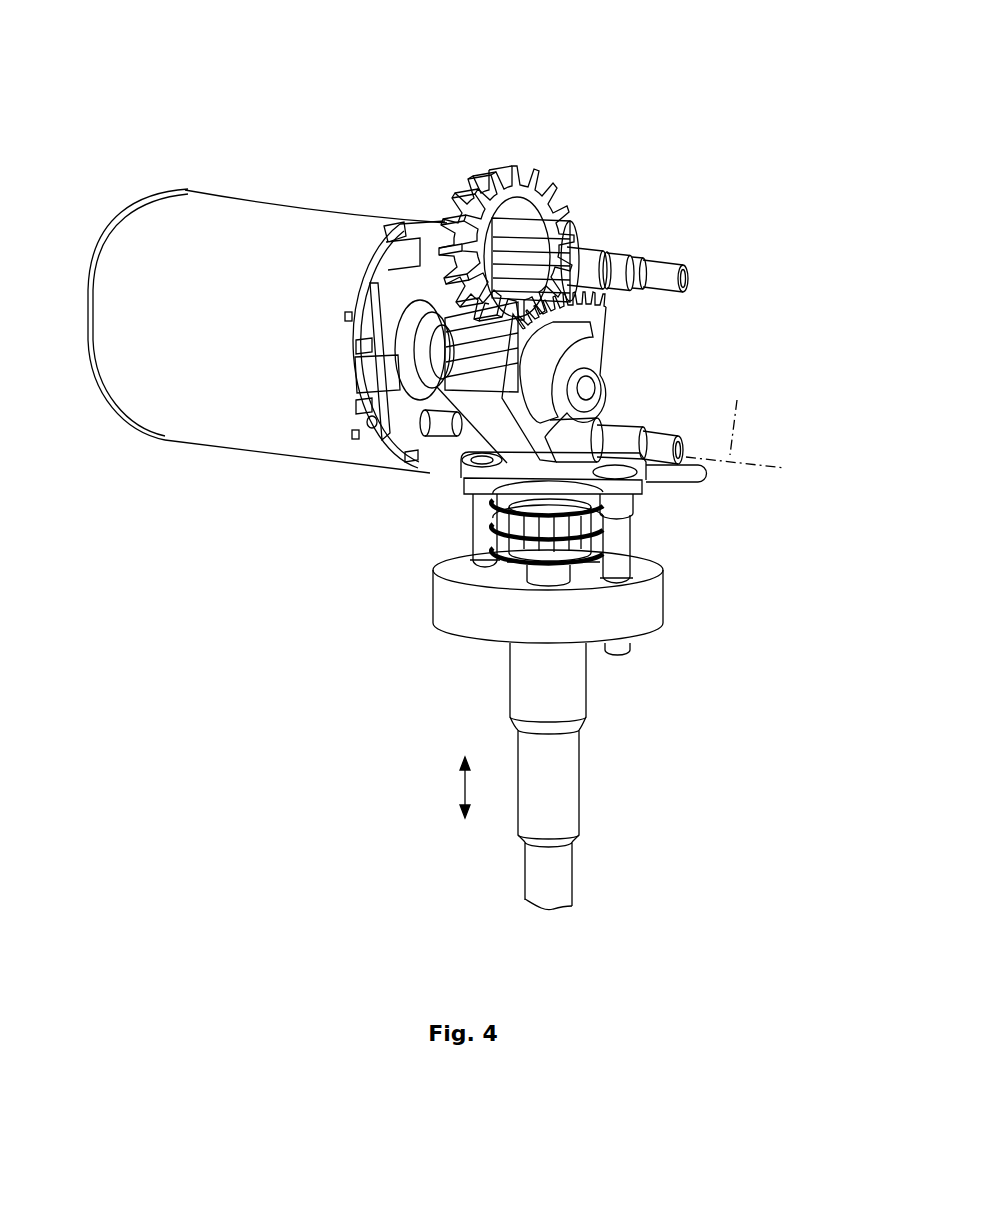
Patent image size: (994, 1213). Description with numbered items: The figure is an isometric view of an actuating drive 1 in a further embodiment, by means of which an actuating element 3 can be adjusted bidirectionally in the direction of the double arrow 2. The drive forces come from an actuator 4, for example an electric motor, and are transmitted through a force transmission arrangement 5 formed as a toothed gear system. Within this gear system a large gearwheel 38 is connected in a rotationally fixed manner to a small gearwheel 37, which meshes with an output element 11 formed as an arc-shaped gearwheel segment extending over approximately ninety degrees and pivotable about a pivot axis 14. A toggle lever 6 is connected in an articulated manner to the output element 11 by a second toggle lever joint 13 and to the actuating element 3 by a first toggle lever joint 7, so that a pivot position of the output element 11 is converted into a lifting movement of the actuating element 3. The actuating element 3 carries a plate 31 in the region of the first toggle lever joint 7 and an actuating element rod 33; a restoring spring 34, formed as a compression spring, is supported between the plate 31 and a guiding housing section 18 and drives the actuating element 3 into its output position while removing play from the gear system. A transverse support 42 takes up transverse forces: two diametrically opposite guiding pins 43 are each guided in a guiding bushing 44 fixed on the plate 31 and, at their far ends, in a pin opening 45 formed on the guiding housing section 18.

The actuating drive 1 is at (651, 182).
The double arrow 2 is at (460, 787).
The actuating element 3 is at (602, 776).
The actuator 4 is at (263, 212).
The force transmission arrangement 5 is at (638, 375).
The toggle lever 6 is at (527, 523).
The first toggle lever joint 7 is at (557, 482).
The output element 11 is at (607, 323).
The second toggle lever joint 13 is at (587, 388).
The pivot axis 14 is at (735, 418).
The guiding housing section 18 is at (440, 603).
The plate 31 is at (482, 482).
The actuating element rod 33 is at (563, 812).
The restoring spring 34 is at (573, 557).
The small gearwheel 37 is at (583, 230).
The large gearwheel 38 is at (512, 172).
The transverse support 42 is at (575, 589).
The guiding pins 43 is at (482, 528).
The guiding bushing 44 is at (634, 460).
The pin opening 45 is at (470, 560).